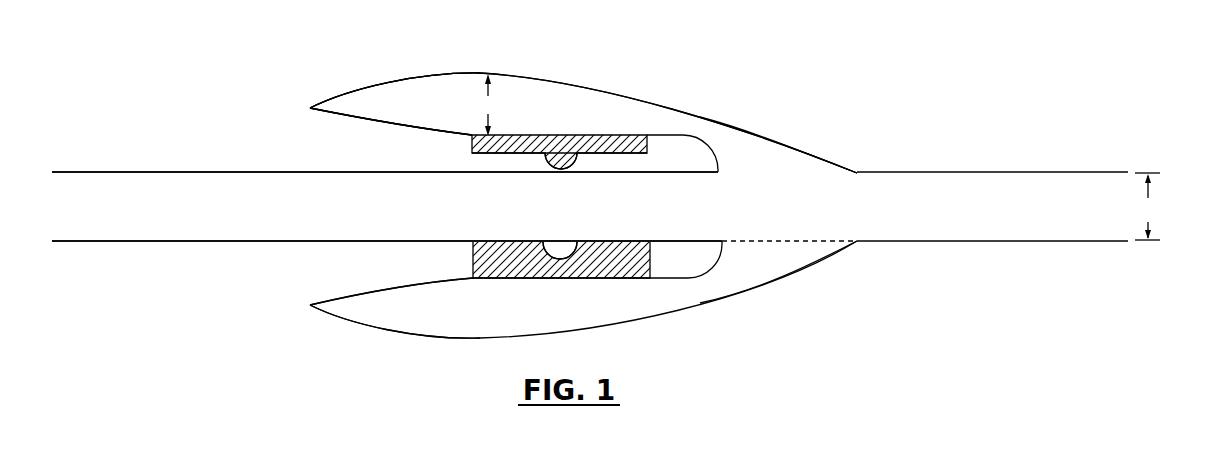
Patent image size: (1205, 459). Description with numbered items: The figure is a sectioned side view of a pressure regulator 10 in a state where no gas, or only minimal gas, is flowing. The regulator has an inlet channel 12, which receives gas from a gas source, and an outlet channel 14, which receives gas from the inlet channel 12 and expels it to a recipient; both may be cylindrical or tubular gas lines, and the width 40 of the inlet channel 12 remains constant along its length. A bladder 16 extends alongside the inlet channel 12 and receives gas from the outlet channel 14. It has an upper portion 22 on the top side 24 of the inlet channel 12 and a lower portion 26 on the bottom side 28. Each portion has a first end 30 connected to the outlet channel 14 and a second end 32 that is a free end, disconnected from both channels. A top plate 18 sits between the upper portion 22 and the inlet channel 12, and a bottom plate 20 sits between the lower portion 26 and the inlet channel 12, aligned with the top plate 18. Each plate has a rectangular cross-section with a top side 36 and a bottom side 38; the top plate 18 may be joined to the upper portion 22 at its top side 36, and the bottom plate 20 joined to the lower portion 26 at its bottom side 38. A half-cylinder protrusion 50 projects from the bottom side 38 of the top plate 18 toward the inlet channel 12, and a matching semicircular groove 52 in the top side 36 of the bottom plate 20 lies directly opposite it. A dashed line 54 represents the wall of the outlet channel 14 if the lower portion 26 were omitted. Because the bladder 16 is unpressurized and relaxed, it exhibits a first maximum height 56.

The pressure regulator 10 is at (1128, 71).
The inlet channel 12 is at (137, 187).
The outlet channel 14 is at (1043, 190).
The bladder 16 is at (404, 66).
The top plate 18 is at (472, 137).
The bottom plate 20 is at (473, 258).
The upper portion 22 is at (527, 100).
The top side 24 is at (250, 172).
The lower portion 26 is at (613, 305).
The bottom side 28 is at (188, 243).
The first end 30 is at (767, 163).
The second end 32 is at (350, 103).
The top side 36 is at (623, 135).
The bottom side 38 is at (625, 153).
The width 40 is at (1147, 206).
The protrusion 50 is at (565, 170).
The groove 52 is at (556, 270).
The dashed line 54 is at (780, 241).
The first maximum height 56 is at (487, 105).